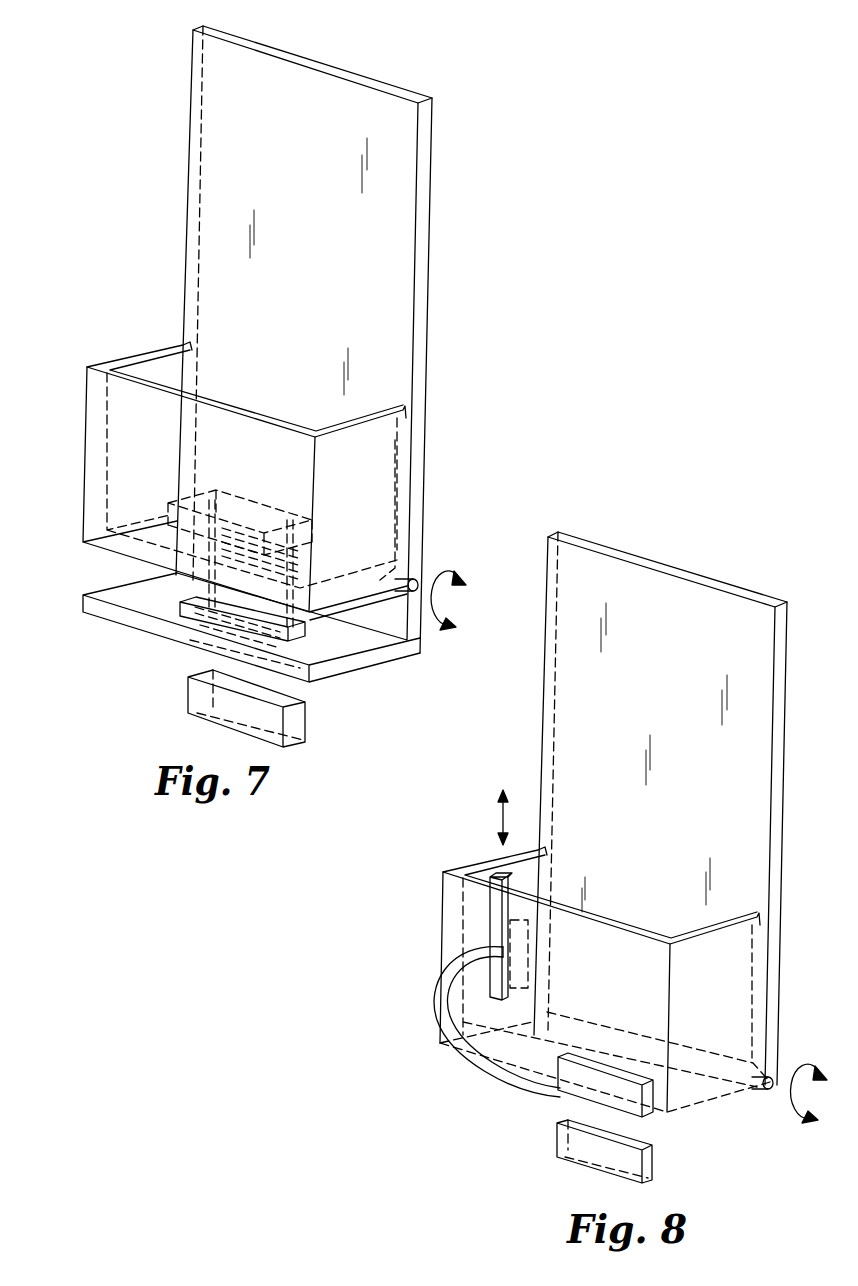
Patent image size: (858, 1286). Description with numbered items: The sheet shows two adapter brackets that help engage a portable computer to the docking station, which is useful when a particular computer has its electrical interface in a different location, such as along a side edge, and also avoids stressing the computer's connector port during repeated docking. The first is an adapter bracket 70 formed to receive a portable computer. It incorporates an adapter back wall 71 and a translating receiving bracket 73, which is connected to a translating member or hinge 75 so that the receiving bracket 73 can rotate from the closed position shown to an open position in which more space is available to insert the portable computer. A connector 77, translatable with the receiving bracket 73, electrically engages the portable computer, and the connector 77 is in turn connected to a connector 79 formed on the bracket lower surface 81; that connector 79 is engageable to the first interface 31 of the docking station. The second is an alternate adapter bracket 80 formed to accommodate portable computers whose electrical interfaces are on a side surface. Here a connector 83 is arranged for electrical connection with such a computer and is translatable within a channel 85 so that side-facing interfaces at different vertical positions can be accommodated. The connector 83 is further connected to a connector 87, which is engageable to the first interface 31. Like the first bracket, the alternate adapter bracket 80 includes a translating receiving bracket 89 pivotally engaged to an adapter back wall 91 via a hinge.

In FIG. 7, the adapter bracket 70 is at (502, 288).
In FIG. 7, the adapter back wall 71 is at (370, 76).
In FIG. 7, the translating receiving bracket 73 is at (115, 436).
In FIG. 8, the translating receiving bracket 73 is at (605, 979).
In FIG. 7, the translating member or hinge 75 is at (420, 531).
In FIG. 8, the translating member or hinge 75 is at (762, 1083).
In FIG. 7, the connector 77 is at (165, 541).
In FIG. 7, the connector 79 is at (182, 617).
In FIG. 7, the bracket lower surface 81 is at (389, 667).
In FIG. 7, the first interface 31 is at (307, 725).
In FIG. 8, the first interface 31 is at (653, 1165).
In FIG. 8, the alternate adapter bracket 80 is at (834, 749).
In FIG. 8, the adapter back wall 91 is at (653, 565).
In FIG. 8, the connector 83 is at (484, 934).
In FIG. 8, the channel 85 is at (490, 900).
In FIG. 8, the connector 87 is at (560, 1095).
In FIG. 8, the translating receiving bracket 89 is at (440, 1011).